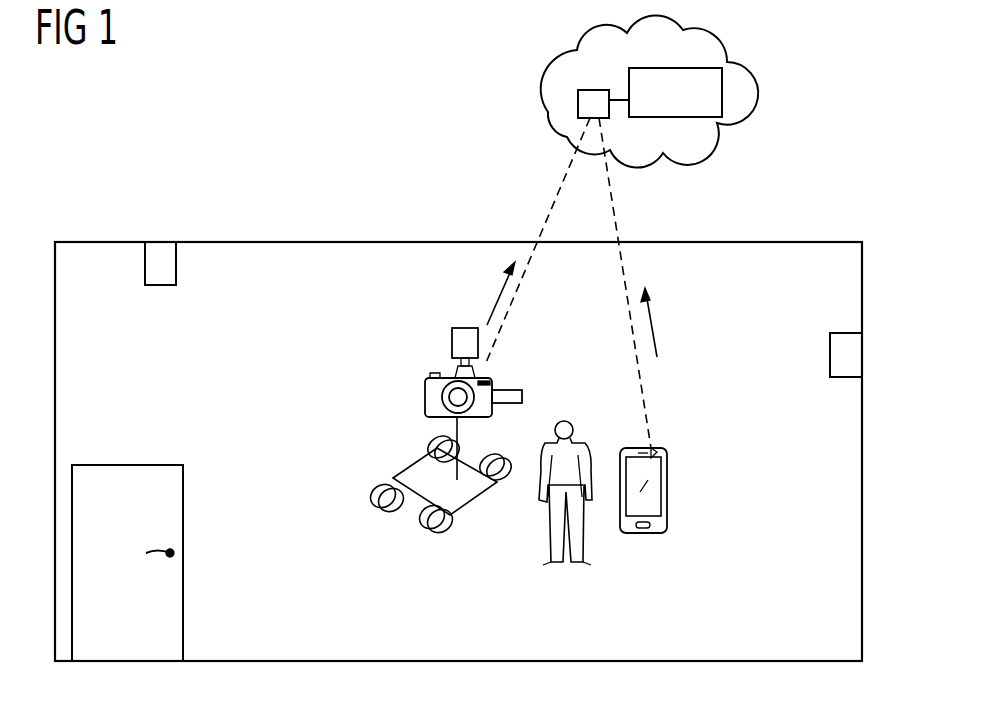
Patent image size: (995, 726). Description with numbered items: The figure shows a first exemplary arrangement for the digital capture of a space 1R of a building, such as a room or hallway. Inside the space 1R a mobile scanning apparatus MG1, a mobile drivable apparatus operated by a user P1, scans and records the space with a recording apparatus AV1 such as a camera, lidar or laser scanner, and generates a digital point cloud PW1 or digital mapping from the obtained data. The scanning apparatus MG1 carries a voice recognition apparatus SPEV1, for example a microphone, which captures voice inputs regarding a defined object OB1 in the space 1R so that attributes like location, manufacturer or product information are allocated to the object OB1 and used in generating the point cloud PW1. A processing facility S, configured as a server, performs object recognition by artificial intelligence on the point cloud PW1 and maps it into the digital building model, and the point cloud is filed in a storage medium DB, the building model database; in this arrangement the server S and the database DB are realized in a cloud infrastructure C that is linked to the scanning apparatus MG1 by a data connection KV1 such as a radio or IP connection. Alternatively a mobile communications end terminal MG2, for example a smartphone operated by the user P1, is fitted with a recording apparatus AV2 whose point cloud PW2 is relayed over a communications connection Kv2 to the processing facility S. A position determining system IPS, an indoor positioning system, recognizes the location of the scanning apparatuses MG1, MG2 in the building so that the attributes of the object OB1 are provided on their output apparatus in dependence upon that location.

The cloud infrastructure C is at (697, 147).
The processing facility S is at (587, 107).
The storage medium DB is at (723, 92).
The space of a building 1R is at (318, 242).
The position determining system IPS is at (161, 250).
The defined object OB1 is at (840, 355).
The data connection KV1 is at (563, 180).
The communications connection Kv2 is at (612, 203).
The digital point cloud PW1 is at (500, 282).
The point cloud PW2 is at (650, 315).
The recording apparatus AV1 is at (425, 397).
The voice recognition apparatus SPEV1 is at (513, 387).
The mobile scanning apparatus MG1 is at (430, 533).
The user P1 is at (575, 442).
The mobile communications end terminal MG2 is at (663, 512).
The recording apparatus AV2 is at (655, 450).